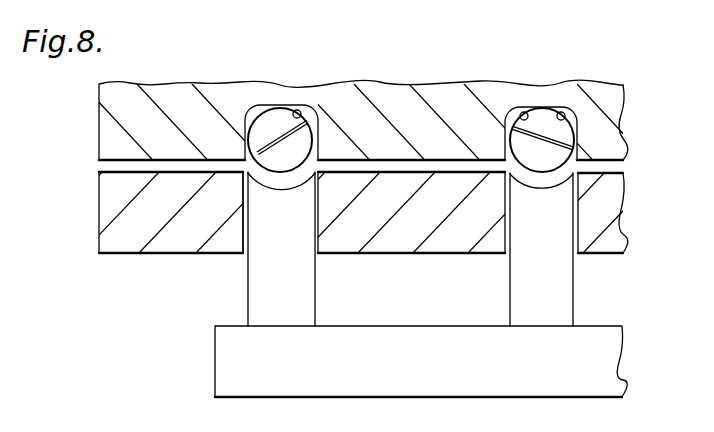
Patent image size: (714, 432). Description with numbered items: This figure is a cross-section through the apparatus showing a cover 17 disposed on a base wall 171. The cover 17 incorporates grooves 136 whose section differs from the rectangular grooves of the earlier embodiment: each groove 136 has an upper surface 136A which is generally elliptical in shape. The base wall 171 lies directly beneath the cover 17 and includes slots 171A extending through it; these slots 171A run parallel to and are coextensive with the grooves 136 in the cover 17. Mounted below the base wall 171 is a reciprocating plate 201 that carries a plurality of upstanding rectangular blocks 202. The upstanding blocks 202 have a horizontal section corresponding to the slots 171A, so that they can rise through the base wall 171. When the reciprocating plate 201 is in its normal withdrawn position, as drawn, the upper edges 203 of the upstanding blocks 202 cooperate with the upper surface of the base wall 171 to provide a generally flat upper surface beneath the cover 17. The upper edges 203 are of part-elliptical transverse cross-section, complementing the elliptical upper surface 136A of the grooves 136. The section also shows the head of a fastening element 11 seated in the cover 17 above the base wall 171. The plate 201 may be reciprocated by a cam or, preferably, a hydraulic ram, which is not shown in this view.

The screw 11 is at (283, 118).
The cover 17 is at (105, 133).
The grooves 136 is at (300, 112).
The upper surface 136A is at (560, 113).
The base wall 171 is at (110, 207).
The slots 171A is at (243, 258).
The reciprocating plate 201 is at (417, 367).
The upstanding rectangular blocks 202 is at (306, 290).
The upper edges 203 is at (543, 184).